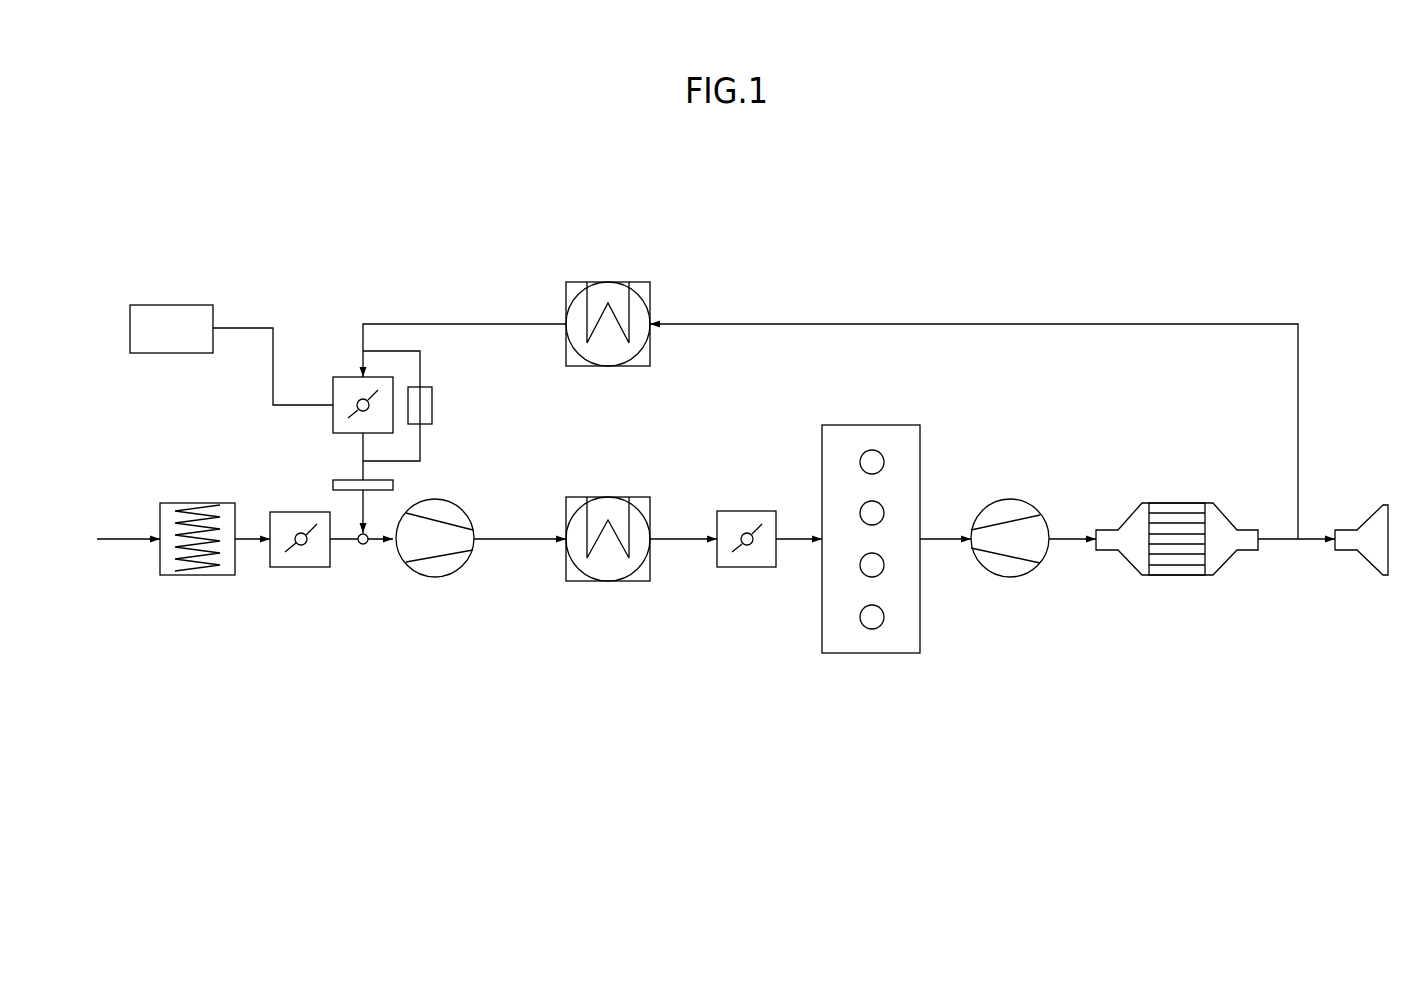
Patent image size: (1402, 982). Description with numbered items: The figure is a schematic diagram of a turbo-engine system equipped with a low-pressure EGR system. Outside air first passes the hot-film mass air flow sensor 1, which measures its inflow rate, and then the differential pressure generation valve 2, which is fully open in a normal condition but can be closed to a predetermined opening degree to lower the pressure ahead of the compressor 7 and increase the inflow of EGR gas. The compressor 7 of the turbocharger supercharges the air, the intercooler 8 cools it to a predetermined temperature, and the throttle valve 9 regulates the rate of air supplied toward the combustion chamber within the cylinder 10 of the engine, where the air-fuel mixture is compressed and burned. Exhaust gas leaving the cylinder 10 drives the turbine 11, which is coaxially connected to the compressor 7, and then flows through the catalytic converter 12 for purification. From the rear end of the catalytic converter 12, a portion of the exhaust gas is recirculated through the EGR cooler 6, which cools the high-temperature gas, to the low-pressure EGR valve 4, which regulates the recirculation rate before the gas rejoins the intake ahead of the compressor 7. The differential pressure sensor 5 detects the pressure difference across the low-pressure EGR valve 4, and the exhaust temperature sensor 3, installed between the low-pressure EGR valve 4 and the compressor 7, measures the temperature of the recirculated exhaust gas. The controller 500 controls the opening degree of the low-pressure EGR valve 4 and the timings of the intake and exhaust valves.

The hot-film mass air flow sensor 1 is at (197, 575).
The differential pressure generation valve 2 is at (300, 567).
The exhaust temperature sensor 3 is at (333, 480).
The low-pressure EGR valve 4 is at (343, 375).
The differential pressure sensor 5 is at (433, 404).
The EGR cooler 6 is at (608, 282).
The compressor 7 is at (435, 578).
The intercooler 8 is at (608, 581).
The throttle valve 9 is at (747, 567).
The cylinder 10 is at (871, 653).
The turbine 11 is at (1008, 578).
The catalytic converter 12 is at (1177, 575).
The controller 500 is at (171, 329).